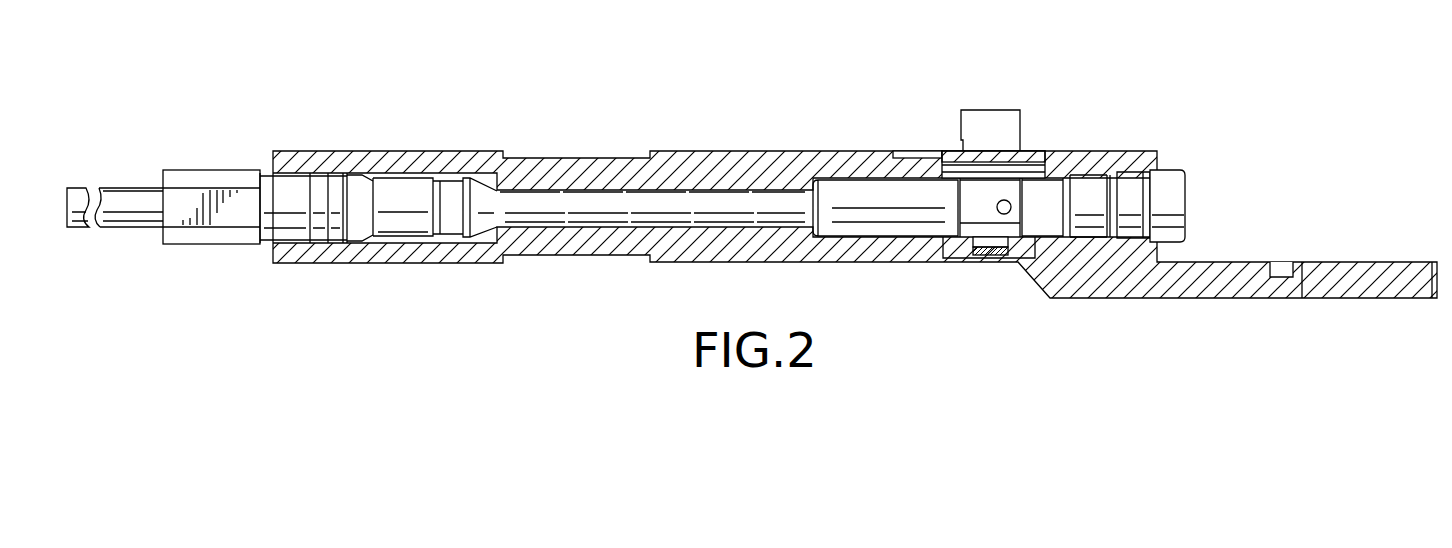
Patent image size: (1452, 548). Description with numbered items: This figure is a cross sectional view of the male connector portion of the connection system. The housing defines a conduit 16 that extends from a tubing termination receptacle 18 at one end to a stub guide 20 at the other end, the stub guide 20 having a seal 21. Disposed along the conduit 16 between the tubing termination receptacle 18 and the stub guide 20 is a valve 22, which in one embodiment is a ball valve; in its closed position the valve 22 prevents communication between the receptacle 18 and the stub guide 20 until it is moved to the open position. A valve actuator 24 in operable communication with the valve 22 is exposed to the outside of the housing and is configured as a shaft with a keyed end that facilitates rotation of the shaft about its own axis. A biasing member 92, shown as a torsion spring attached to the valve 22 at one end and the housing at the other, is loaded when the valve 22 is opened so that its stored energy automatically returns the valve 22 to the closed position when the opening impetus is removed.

The conduit 16 is at (523, 186).
The tubing termination receptacle 18 is at (352, 176).
The stub guide 20 is at (1168, 185).
The seal 21 is at (1147, 185).
The valve 22 is at (992, 250).
The valve actuator 24 is at (987, 132).
The biasing member 92 is at (986, 250).